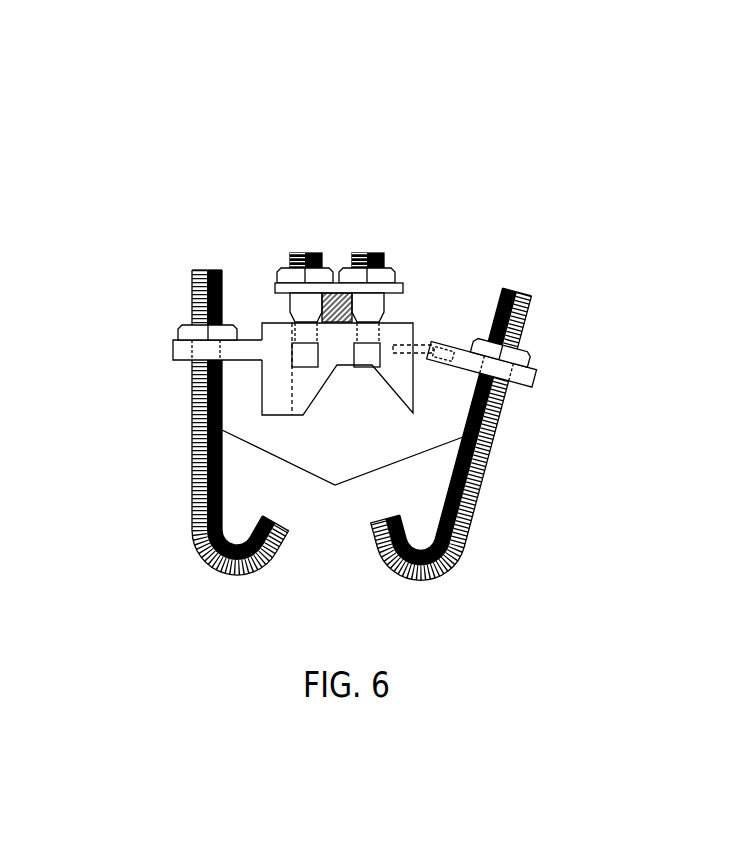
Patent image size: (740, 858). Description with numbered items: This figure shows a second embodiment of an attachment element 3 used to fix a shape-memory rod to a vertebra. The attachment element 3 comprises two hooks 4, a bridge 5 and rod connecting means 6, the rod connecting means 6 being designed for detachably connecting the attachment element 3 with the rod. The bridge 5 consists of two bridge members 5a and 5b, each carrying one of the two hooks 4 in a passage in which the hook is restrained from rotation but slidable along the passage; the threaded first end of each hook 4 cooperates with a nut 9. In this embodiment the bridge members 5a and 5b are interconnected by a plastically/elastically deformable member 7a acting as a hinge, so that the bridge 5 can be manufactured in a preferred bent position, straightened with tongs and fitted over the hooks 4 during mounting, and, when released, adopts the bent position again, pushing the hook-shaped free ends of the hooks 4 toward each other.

The attachment element 3 is at (320, 155).
The hooks 4 is at (342, 475).
The bridge 5 is at (392, 407).
The bridge member 5a is at (180, 350).
The bridge member 5b is at (523, 375).
The rod connecting means 6 is at (280, 310).
The plastically/elastically deformable member 7a is at (427, 343).
The nut 9 is at (187, 330).